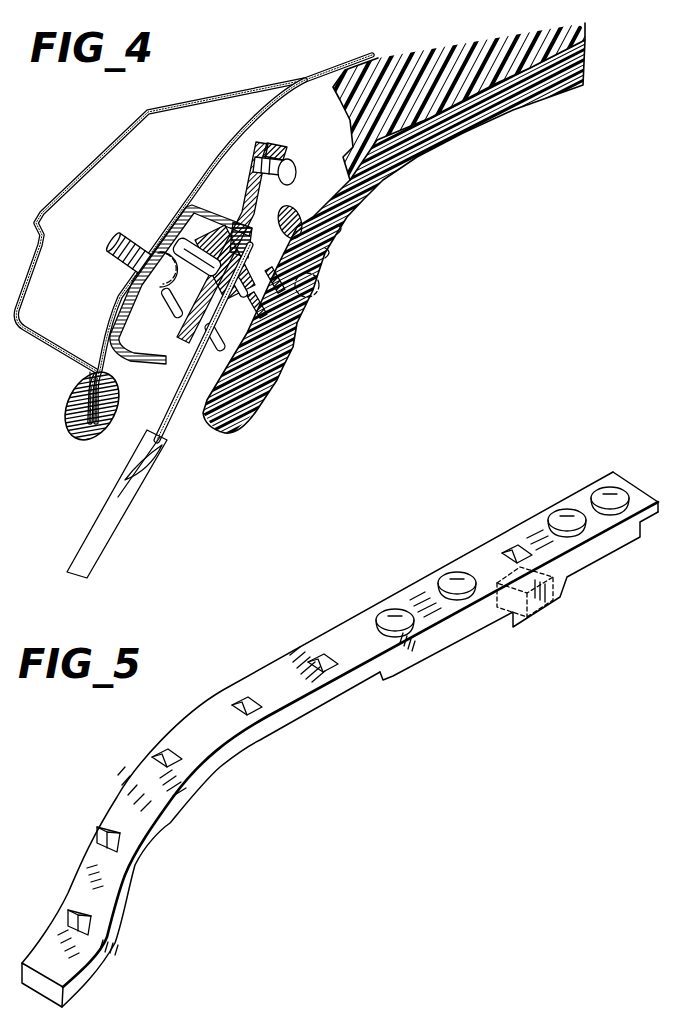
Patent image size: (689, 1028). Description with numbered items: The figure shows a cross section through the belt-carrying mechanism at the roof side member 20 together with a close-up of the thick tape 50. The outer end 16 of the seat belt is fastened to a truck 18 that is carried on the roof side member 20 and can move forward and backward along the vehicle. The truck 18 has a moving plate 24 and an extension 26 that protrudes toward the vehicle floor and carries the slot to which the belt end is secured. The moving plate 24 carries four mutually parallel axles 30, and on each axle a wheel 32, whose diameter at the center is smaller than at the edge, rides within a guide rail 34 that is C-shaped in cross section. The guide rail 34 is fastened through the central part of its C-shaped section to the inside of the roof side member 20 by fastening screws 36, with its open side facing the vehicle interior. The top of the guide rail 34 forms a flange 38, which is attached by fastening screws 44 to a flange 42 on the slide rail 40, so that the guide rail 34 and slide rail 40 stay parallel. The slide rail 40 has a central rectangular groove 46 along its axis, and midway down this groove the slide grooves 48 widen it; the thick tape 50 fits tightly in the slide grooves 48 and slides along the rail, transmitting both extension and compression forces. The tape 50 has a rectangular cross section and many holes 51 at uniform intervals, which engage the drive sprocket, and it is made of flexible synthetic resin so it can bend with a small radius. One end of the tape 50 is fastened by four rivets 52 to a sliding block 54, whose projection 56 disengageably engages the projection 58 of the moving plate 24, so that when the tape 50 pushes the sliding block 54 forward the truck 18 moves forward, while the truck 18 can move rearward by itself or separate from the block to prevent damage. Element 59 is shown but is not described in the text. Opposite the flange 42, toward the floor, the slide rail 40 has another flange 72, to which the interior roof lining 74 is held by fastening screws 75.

In FIG. 4, the outer end 16 is at (137, 493).
In FIG. 4, the truck 18 is at (173, 426).
In FIG. 4, the roof side member 20 is at (115, 372).
In FIG. 4, the moving plate 24 is at (248, 347).
In FIG. 4, the extension 26 is at (163, 406).
In FIG. 4, the axle 30 is at (200, 263).
In FIG. 4, the wheel 32 is at (187, 348).
In FIG. 4, the guide rail 34 is at (190, 207).
In FIG. 4, the fastening screw 36 is at (120, 248).
In FIG. 4, the flange 38 is at (250, 173).
In FIG. 4, the slide rail 40 is at (282, 213).
In FIG. 4, the flange 42 is at (287, 150).
In FIG. 4, the fastening screw 44 is at (293, 166).
In FIG. 4, the rectangular groove 46 is at (342, 230).
In FIG. 4, the slide groove 48 is at (327, 250).
In FIG. 4, the thick tape 50 is at (247, 200).
In FIG. 5, the thick tape 50 is at (300, 700).
In FIG. 5, the hole 51 is at (315, 660).
In FIG. 5, the rivet 52 is at (393, 607).
In FIG. 5, the sliding block 54 is at (593, 560).
In FIG. 4, the projection 56 is at (281, 305).
In FIG. 5, the projection 56 is at (548, 598).
In FIG. 4, the projection 58 is at (236, 227).
In FIG. 5, the fastener 59 is at (532, 617).
In FIG. 4, the flange 72 is at (266, 330).
In FIG. 4, the interior roof lining 74 is at (467, 120).
In FIG. 4, the fastening screw 75 is at (319, 290).